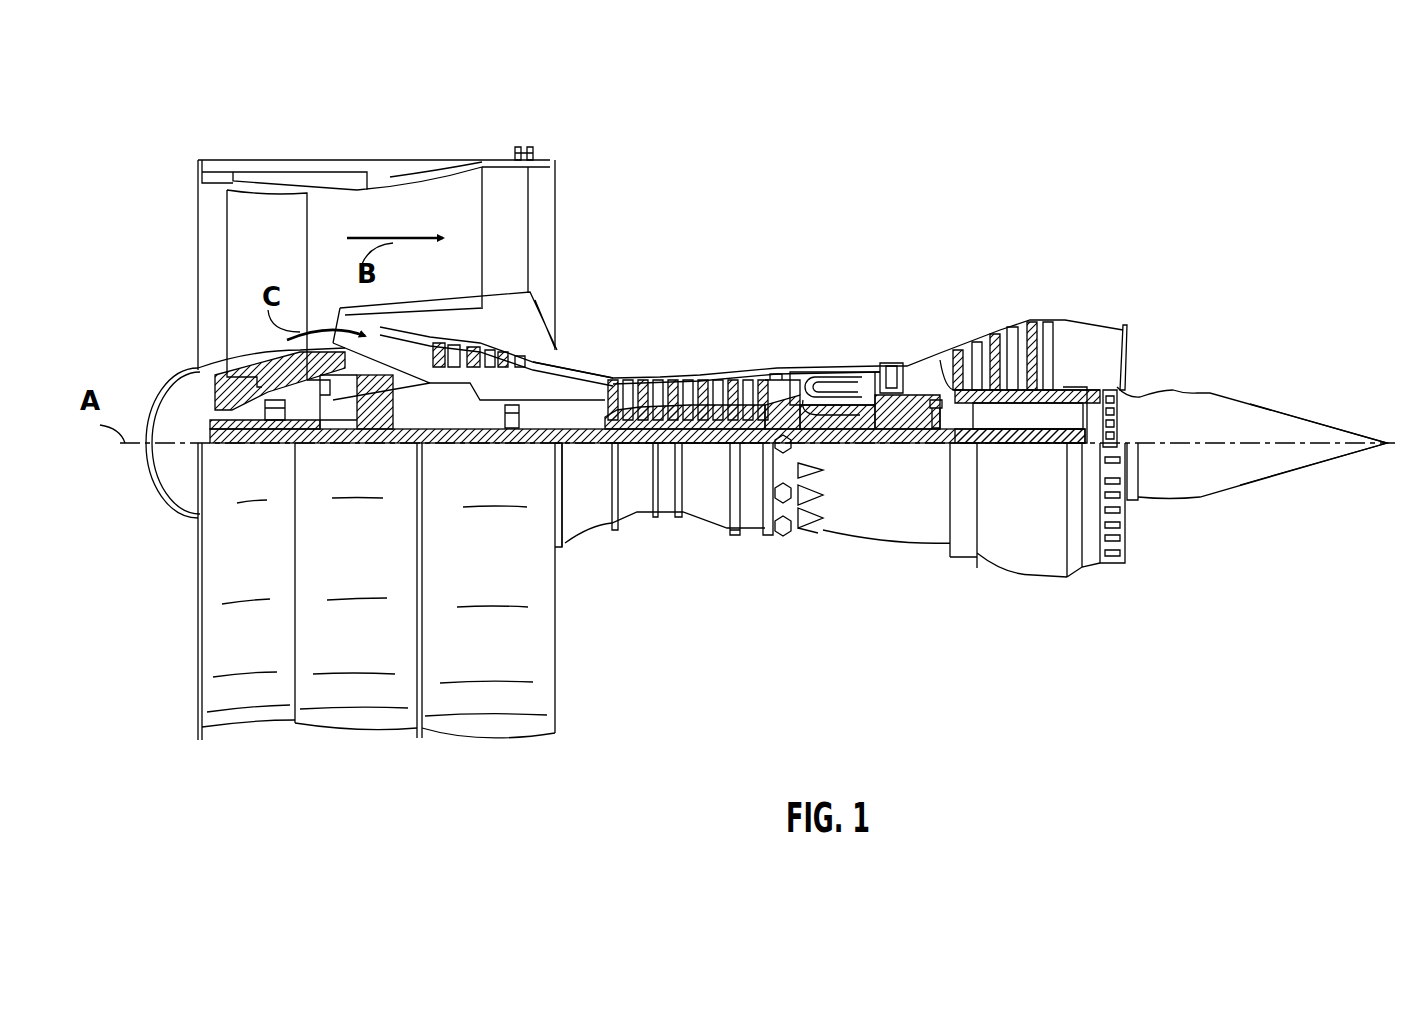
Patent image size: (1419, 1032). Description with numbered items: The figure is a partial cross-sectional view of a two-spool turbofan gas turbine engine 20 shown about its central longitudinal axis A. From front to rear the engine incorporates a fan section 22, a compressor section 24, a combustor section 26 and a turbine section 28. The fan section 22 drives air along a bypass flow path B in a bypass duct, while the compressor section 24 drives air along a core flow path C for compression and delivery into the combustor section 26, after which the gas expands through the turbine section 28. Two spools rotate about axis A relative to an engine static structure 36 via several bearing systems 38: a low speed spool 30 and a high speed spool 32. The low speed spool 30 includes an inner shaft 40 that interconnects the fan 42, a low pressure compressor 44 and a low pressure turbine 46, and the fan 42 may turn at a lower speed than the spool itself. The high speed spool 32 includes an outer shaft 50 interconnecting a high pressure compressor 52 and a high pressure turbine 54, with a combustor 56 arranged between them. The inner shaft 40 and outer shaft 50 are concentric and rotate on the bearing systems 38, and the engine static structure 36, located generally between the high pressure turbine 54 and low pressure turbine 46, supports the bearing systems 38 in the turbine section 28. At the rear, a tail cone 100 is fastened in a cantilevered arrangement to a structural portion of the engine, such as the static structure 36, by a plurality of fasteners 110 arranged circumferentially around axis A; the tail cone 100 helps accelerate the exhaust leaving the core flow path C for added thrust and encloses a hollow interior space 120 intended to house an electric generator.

The gas turbine engine 20 is at (1062, 226).
The fan section 22 is at (283, 160).
The compressor section 24 is at (688, 298).
The combustor section 26 is at (842, 296).
The turbine section 28 is at (953, 280).
The low speed spool 30 is at (722, 452).
The high speed spool 32 is at (760, 410).
The engine static structure 36 is at (752, 540).
The bearing systems 38 is at (937, 428).
The inner shaft 40 is at (573, 443).
The fan 42 is at (278, 272).
The low pressure compressor 44 is at (490, 350).
The low pressure turbine 46 is at (1018, 330).
The outer shaft 50 is at (841, 428).
The high pressure compressor 52 is at (682, 417).
The high pressure turbine 54 is at (889, 366).
The combustor 56 is at (828, 386).
The tail cone 100 is at (1268, 404).
The fasteners 110 is at (1114, 390).
The hollow interior space 120 is at (1198, 400).